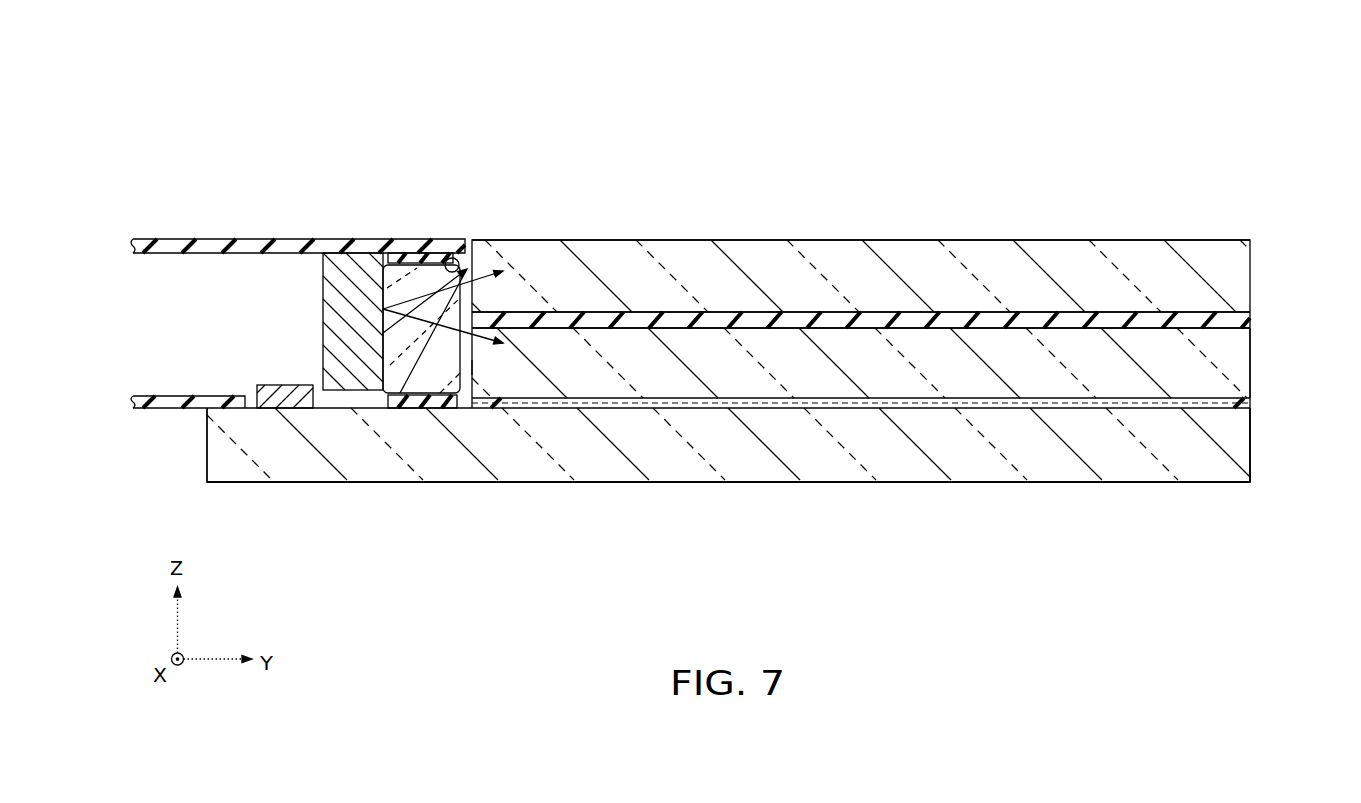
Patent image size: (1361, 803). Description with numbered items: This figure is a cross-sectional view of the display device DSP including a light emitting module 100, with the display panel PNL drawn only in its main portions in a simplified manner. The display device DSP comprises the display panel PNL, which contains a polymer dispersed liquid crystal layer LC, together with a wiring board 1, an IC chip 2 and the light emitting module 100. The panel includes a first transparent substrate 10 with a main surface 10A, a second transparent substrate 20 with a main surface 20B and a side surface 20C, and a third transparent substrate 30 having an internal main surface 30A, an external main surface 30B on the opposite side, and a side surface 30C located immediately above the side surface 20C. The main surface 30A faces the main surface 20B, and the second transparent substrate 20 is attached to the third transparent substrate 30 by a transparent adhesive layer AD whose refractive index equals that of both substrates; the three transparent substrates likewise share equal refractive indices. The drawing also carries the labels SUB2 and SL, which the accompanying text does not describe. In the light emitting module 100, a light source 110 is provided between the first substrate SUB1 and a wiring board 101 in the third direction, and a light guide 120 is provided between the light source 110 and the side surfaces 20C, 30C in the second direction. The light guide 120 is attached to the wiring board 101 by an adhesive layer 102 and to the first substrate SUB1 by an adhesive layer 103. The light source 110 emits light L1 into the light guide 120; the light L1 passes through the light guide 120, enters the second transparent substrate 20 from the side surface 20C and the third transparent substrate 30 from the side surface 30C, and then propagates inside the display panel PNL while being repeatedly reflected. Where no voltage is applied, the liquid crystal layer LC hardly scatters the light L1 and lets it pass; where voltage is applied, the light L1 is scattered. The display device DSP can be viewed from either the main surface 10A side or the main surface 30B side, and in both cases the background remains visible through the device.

The display device DSP is at (1080, 102).
The light emitting module 100 is at (299, 341).
The wiring board 101 is at (245, 238).
The adhesive layer 102 is at (410, 250).
The adhesive layer 103 is at (405, 408).
The light source 110 is at (347, 283).
The light guide 120 is at (397, 347).
The wiring board 1 is at (170, 392).
The IC chip 2 is at (273, 390).
The third transparent substrate 30 is at (1223, 250).
The main surface (internal surface) 30A is at (1068, 318).
The main surface (external surface) 30B is at (1138, 233).
The side surface 30C is at (452, 258).
The adhesive layer AD is at (755, 318).
The second transparent substrate 20 is at (1092, 375).
The main surface 20B is at (988, 316).
The side surface 20C is at (461, 371).
The second substrate SUB2 is at (1260, 362).
The liquid crystal layer LC is at (1203, 398).
The seal SL is at (1252, 402).
The first substrate SUB1 is at (1262, 448).
The display panel PNL is at (272, 470).
The first transparent substrate 10 is at (1035, 465).
The main surface 10A is at (1157, 495).
The light L1 is at (484, 337).